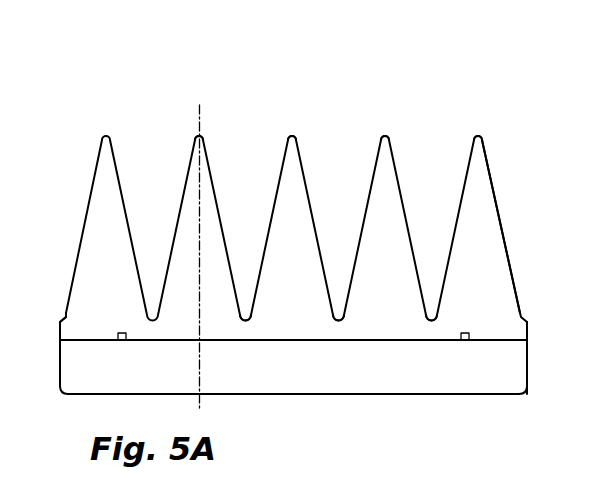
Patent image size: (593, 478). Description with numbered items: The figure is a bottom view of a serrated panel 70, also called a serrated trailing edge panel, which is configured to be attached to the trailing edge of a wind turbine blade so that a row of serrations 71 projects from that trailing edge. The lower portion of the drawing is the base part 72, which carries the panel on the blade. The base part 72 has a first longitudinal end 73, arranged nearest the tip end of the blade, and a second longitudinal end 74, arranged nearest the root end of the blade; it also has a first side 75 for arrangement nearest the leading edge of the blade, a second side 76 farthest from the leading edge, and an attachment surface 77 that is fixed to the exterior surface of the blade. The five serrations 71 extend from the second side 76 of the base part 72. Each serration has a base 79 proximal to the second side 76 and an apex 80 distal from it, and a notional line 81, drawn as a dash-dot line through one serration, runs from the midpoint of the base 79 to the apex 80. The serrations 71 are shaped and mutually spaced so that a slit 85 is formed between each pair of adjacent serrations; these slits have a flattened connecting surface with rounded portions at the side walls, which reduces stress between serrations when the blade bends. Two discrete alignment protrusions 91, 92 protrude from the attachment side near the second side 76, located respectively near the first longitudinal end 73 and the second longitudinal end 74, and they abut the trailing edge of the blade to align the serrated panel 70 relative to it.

The serrated panel 70 is at (168, 75).
The serrations 71 is at (293, 132).
The base part 72 is at (534, 378).
The first longitudinal end 73 is at (58, 377).
The second longitudinal end 74 is at (528, 358).
The first side 75 is at (367, 395).
The second side 76 is at (482, 338).
The attachment surface 77 is at (293, 375).
The base 79 is at (480, 322).
The apex 80 is at (479, 134).
The notional line 81 is at (197, 187).
The slit 85 is at (340, 313).
The alignment protrusion 91 is at (113, 337).
The alignment protrusion 92 is at (466, 341).